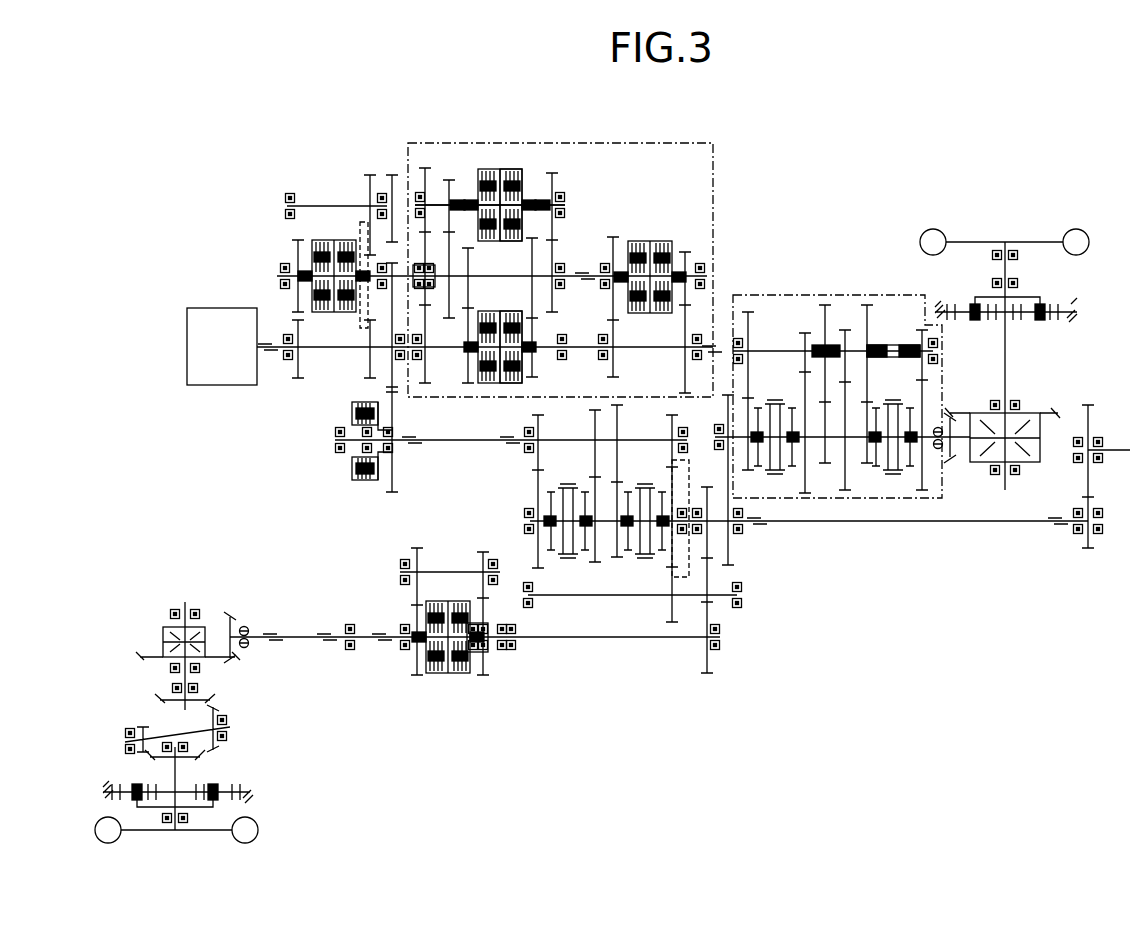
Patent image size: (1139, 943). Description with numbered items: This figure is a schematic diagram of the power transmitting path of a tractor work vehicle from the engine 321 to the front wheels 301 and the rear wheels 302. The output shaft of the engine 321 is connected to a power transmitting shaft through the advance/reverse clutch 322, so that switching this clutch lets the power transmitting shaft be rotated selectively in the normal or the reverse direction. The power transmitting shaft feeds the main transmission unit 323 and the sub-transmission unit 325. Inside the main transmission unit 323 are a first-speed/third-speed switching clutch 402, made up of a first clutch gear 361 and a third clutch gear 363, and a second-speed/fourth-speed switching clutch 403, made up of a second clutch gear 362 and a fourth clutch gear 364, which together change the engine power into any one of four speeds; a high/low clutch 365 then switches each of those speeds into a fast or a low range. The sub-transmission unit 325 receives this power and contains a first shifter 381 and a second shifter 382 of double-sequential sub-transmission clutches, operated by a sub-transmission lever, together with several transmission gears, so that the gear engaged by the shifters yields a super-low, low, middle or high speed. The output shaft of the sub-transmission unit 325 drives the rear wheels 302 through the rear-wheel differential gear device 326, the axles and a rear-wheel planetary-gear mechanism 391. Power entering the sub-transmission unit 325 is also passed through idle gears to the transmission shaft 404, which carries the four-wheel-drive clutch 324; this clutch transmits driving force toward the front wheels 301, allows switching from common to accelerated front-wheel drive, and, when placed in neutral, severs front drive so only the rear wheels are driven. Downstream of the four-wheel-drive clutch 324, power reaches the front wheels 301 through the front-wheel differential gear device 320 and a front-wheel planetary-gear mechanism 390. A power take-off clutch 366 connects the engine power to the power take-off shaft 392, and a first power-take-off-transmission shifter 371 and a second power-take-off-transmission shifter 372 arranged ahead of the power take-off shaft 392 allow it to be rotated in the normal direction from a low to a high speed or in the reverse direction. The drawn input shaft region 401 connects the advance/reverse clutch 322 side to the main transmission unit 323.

The front wheels 301 is at (258, 830).
The rear wheels 302 is at (935, 229).
The front-wheel differential gear device 320 is at (176, 602).
The engine 321 is at (240, 308).
The advance/reverse clutch 322 is at (335, 240).
The main transmission unit 323 is at (600, 143).
The 4WD clutch 324 is at (449, 676).
The sub-transmission unit 325 is at (863, 497).
The rear-wheel differential gear device 326 is at (1040, 406).
The first clutch gear 361 is at (486, 172).
The second clutch gear 362 is at (513, 382).
The third clutch gear 363 is at (514, 172).
The fourth clutch gear 364 is at (497, 314).
The high/low clutch 365 is at (650, 241).
The PTO clutch 366 is at (368, 482).
The first PTO-transmission shifter 371 is at (566, 557).
The second PTO-transmission shifter 372 is at (643, 557).
The first shifter 381 is at (893, 484).
The second shifter 382 is at (775, 483).
The front-wheel planetary-gear mechanism 390 is at (245, 774).
The rear-wheel planetary-gear mechanism 391 is at (990, 327).
The PTO shaft 392 is at (1110, 456).
The input shaft 401 is at (405, 272).
The 1-speed/3-speed switching clutch 402 is at (530, 185).
The 2-speed/4-speed switching clutch 403 is at (484, 392).
The transmission shaft 404 is at (608, 640).